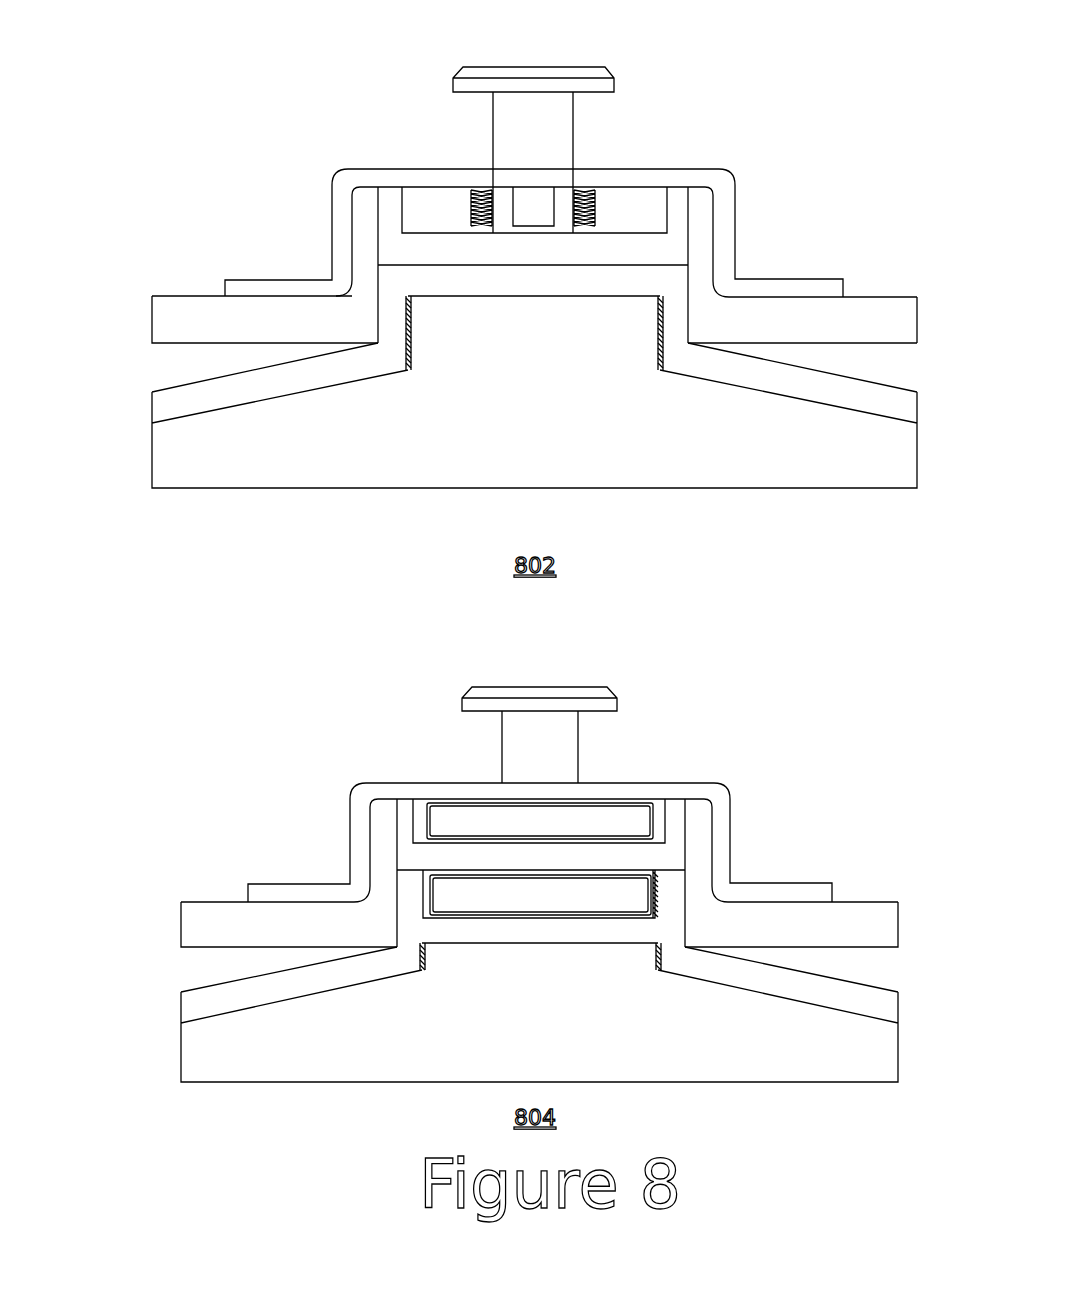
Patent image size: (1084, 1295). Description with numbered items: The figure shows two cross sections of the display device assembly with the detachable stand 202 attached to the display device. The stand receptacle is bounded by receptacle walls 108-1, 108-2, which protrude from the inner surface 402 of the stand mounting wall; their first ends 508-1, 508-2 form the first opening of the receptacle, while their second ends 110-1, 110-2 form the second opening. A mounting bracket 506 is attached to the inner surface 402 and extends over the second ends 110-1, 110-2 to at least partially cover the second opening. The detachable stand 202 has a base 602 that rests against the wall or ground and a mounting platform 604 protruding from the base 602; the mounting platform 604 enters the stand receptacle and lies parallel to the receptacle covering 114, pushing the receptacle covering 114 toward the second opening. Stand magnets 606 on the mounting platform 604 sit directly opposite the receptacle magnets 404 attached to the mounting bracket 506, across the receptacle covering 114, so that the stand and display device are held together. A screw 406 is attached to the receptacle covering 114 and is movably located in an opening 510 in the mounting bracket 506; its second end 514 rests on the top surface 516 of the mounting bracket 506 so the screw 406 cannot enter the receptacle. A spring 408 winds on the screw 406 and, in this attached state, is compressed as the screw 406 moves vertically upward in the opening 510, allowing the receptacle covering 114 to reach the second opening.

The receptacle wall 108-1 is at (350, 250).
The receptacle wall 108-2 is at (697, 253).
The second end 110-1 is at (348, 202).
The second end 110-2 is at (718, 250).
The receptacle covering 114 is at (665, 252).
The detachable stand 202 is at (715, 463).
The inner surface 402 is at (850, 297).
The receptacle magnet 404 is at (876, 286).
The screw 406 is at (543, 125).
The spring 408 is at (593, 220).
The mounting bracket 506 is at (647, 178).
The first end 508-1 is at (378, 343).
The first end 508-2 is at (688, 343).
The opening 510 is at (540, 178).
The second end 514 is at (490, 82).
The top surface 516 is at (435, 169).
The base 602 is at (152, 465).
The mounting platform 604 is at (665, 325).
The stand magnet 606 is at (616, 892).